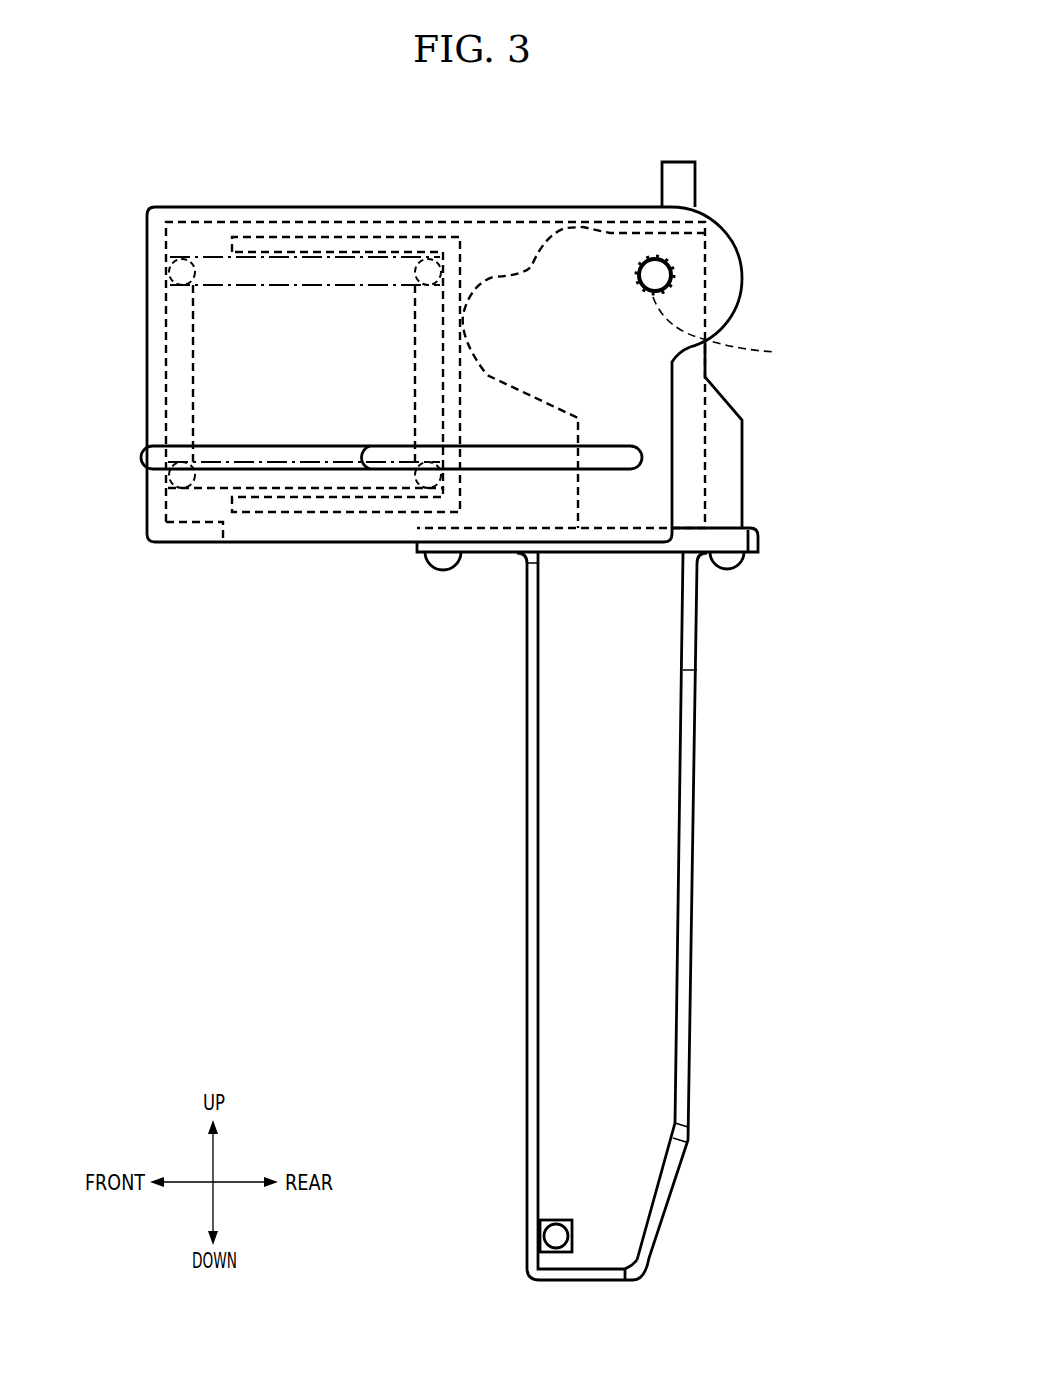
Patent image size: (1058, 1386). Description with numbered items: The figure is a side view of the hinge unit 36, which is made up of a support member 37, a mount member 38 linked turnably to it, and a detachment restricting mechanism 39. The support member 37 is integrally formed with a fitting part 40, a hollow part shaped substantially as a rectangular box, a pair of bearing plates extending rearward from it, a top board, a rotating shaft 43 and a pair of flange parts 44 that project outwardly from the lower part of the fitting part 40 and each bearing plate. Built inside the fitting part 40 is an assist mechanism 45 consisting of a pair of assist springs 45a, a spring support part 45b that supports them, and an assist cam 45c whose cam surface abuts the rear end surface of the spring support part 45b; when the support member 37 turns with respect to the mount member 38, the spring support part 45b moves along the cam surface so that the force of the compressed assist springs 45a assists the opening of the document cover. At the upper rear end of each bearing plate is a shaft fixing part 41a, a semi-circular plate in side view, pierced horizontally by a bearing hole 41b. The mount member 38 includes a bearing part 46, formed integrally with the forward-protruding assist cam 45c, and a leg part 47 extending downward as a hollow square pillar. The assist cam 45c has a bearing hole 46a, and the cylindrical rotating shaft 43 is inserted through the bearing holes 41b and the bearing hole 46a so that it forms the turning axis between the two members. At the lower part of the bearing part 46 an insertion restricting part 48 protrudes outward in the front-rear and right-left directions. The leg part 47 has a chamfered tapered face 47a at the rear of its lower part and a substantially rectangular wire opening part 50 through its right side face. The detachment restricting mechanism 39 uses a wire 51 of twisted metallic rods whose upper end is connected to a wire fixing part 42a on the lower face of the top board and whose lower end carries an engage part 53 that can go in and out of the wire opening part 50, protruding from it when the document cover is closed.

The hinge unit 36 is at (826, 129).
The support member 37 is at (310, 165).
The mount member 38 is at (746, 626).
The detachment restricting mechanism 39 is at (502, 1195).
The fitting part 40 is at (227, 207).
The shaft fixing part 41a is at (710, 222).
The bearing hole 41b is at (675, 263).
The wire fixing part 42a is at (682, 167).
The rotating shaft 43 is at (721, 242).
The flange part 44 is at (148, 457).
The assist mechanism 45 is at (435, 323).
The assist spring 45a is at (305, 317).
The spring support part 45b is at (437, 237).
The assist cam 45c is at (492, 275).
The bearing part 46 is at (737, 498).
The bearing hole 46a is at (737, 333).
The leg part 47 is at (640, 916).
The tapered face 47a is at (660, 1188).
The insertion restricting part 48 is at (760, 547).
The wire opening part 50 is at (577, 1257).
The wire 51 is at (553, 1235).
The engage part 53 is at (498, 1248).